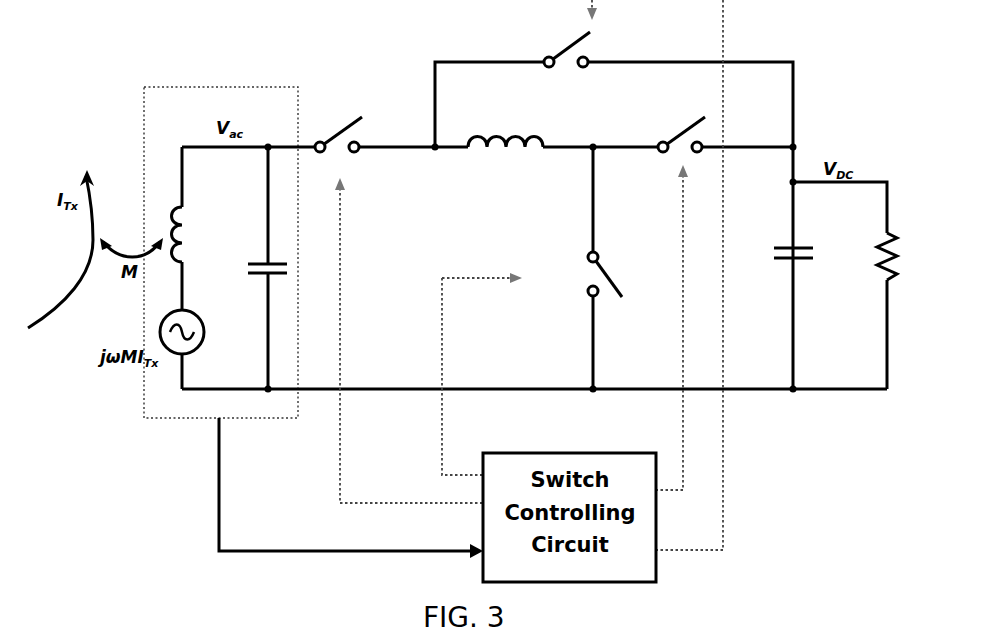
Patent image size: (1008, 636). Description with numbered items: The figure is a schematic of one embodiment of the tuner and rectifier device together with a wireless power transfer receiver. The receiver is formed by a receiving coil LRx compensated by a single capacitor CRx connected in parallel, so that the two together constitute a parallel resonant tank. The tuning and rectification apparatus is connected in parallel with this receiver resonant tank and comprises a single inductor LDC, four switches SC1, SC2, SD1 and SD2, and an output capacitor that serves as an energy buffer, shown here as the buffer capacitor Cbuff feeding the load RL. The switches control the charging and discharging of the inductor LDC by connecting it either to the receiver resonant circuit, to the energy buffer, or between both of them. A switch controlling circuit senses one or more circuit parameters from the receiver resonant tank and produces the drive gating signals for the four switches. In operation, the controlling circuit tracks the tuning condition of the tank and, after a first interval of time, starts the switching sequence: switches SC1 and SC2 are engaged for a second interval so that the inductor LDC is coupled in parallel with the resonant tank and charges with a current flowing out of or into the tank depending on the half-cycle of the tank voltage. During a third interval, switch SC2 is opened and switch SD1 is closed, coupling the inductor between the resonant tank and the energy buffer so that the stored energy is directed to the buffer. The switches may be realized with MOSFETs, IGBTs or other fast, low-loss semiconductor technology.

The receiving coil LRx is at (157, 224).
The capacitor CRx is at (257, 251).
The inductor LDC is at (505, 125).
The buffer capacitor Cbuff is at (773, 237).
The load resistor RL is at (870, 256).
The switch SC1 is at (338, 122).
The switch SC2 is at (577, 274).
The switch SD1 is at (669, 129).
The switch SD2 is at (557, 40).